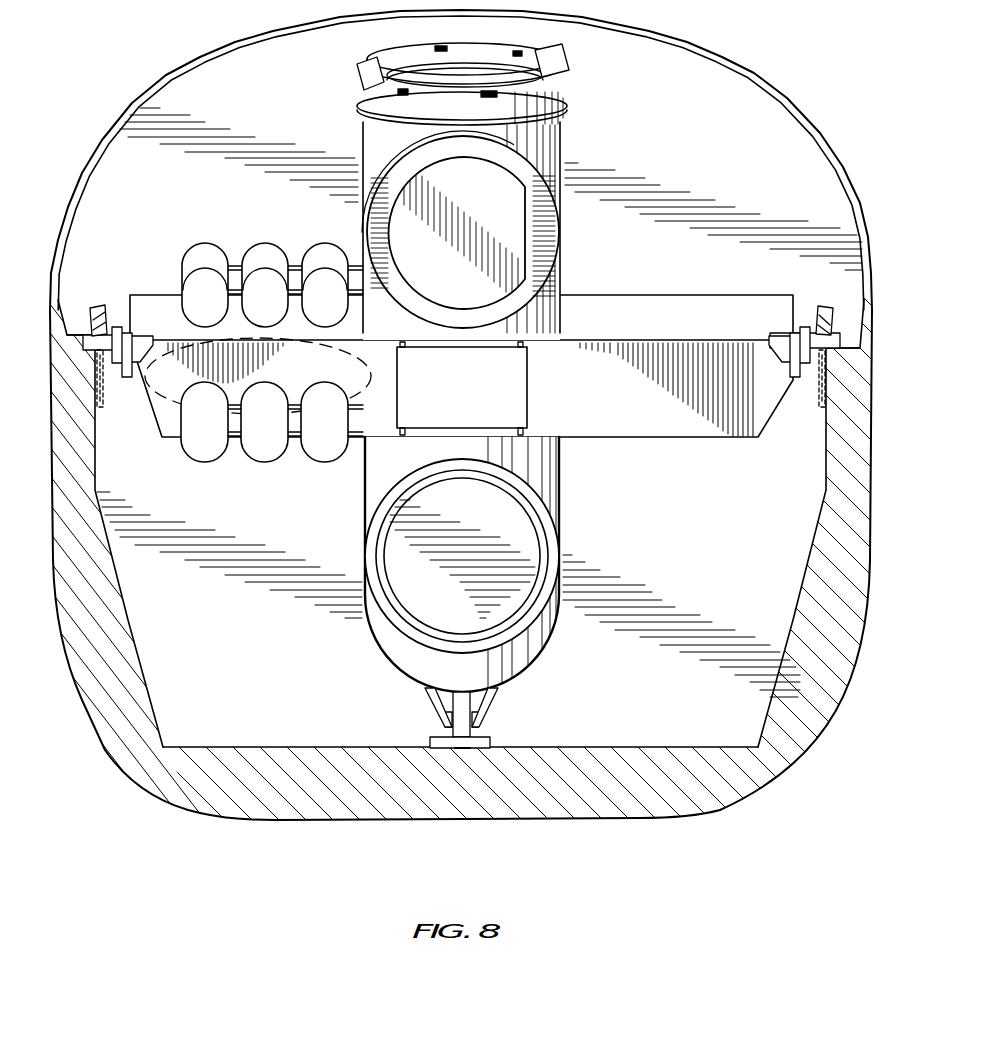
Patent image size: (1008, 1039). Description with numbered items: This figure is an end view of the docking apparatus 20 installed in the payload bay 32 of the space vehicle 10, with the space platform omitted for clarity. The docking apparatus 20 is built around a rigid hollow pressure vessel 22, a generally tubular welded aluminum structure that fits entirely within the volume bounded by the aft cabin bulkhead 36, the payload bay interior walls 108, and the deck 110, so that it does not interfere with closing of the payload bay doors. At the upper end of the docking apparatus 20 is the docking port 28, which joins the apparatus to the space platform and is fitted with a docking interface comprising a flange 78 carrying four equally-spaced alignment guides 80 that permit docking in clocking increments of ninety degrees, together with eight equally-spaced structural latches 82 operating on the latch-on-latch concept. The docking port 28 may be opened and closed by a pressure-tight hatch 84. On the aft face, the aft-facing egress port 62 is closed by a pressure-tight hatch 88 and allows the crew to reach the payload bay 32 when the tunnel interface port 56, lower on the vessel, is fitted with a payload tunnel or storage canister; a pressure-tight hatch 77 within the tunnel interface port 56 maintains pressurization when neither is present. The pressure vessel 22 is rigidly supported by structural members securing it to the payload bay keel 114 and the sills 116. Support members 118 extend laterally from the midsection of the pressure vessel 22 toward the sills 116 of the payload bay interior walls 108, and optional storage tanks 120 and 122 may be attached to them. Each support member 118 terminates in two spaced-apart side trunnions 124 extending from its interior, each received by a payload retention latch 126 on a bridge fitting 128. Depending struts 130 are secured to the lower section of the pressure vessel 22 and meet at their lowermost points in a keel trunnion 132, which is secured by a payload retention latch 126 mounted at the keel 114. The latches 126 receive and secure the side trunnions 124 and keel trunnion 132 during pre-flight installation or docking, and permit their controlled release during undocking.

The space vehicle 10 is at (613, 824).
The docking apparatus 20 is at (612, 266).
The pressure vessel 22 is at (562, 485).
The docking port 28 is at (358, 100).
The payload bay 32 is at (274, 674).
The aft cabin bulkhead 36 is at (679, 179).
The tunnel interface port 56 is at (373, 517).
The egress port 62 is at (548, 230).
The pressure-tight hatch 77 is at (474, 514).
The flange 78 is at (501, 47).
The alignment guides 80 is at (372, 58).
The structural latches 82 is at (452, 37).
The pressure-tight hatch 84 is at (468, 72).
The pressure-tight hatch 88 is at (476, 200).
The payload bay interior walls 108 is at (130, 626).
The deck 110 is at (622, 747).
The payload bay keel 114 is at (462, 752).
The sills 116 is at (97, 404).
The support members 118 is at (158, 294).
The storage tanks 120 is at (253, 252).
The storage tank 122 is at (372, 392).
The side trunnions 124 is at (85, 335).
The payload retention latch 126 is at (116, 326).
The bridge fitting 128 is at (103, 412).
The depending struts 130 is at (468, 690).
The keel trunnion 132 is at (428, 738).